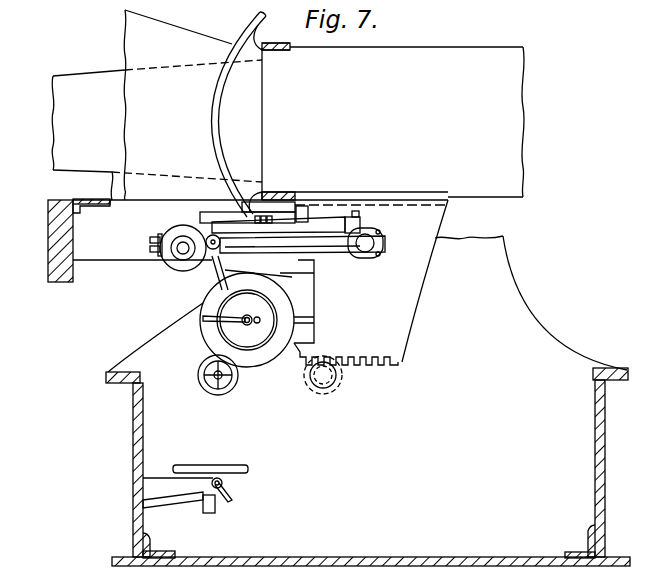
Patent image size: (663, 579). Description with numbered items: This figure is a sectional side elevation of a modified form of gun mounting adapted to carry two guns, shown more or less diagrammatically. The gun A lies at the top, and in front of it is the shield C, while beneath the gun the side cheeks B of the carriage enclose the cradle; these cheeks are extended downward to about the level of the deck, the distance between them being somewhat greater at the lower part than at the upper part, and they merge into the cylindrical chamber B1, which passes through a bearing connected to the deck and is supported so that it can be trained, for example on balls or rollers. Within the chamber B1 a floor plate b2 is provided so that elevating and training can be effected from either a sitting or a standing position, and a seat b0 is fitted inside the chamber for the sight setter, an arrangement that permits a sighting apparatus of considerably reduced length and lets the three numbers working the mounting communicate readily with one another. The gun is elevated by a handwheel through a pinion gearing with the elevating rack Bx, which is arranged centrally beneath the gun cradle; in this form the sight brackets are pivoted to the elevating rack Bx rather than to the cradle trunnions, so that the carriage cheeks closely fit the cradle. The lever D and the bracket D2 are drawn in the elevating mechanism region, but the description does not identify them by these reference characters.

The gun A is at (288, 113).
The shield C is at (60, 216).
The bracket block D2 is at (276, 220).
The lever arm D is at (265, 248).
The elevating rack Bx is at (366, 265).
The side cheeks of the carriage B is at (367, 297).
The cylindrical chamber B1 is at (137, 417).
The seat b0 is at (200, 466).
The floor plate b2 is at (365, 557).